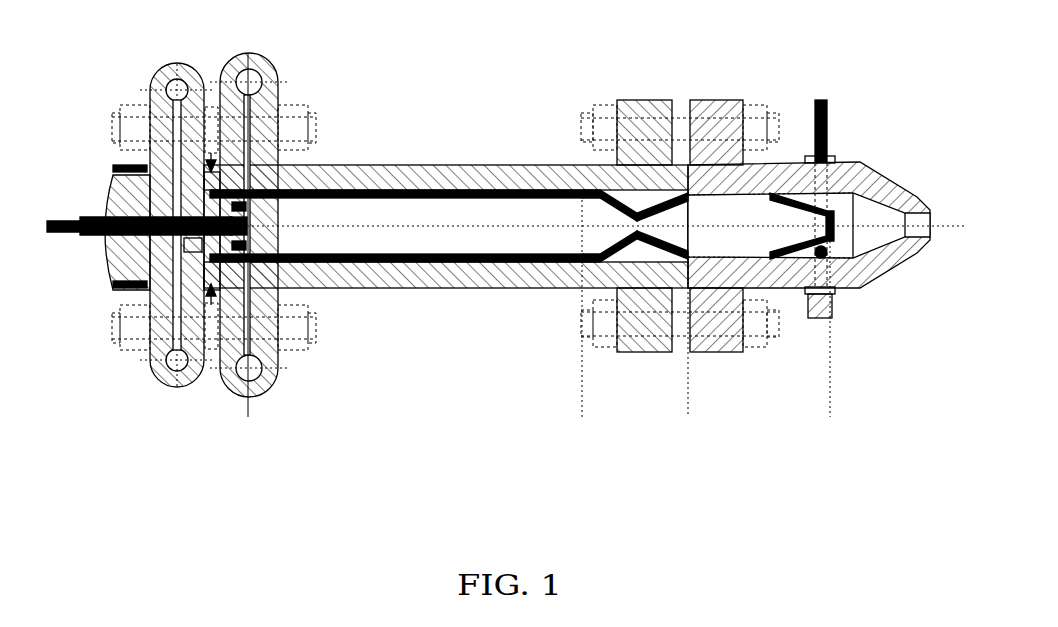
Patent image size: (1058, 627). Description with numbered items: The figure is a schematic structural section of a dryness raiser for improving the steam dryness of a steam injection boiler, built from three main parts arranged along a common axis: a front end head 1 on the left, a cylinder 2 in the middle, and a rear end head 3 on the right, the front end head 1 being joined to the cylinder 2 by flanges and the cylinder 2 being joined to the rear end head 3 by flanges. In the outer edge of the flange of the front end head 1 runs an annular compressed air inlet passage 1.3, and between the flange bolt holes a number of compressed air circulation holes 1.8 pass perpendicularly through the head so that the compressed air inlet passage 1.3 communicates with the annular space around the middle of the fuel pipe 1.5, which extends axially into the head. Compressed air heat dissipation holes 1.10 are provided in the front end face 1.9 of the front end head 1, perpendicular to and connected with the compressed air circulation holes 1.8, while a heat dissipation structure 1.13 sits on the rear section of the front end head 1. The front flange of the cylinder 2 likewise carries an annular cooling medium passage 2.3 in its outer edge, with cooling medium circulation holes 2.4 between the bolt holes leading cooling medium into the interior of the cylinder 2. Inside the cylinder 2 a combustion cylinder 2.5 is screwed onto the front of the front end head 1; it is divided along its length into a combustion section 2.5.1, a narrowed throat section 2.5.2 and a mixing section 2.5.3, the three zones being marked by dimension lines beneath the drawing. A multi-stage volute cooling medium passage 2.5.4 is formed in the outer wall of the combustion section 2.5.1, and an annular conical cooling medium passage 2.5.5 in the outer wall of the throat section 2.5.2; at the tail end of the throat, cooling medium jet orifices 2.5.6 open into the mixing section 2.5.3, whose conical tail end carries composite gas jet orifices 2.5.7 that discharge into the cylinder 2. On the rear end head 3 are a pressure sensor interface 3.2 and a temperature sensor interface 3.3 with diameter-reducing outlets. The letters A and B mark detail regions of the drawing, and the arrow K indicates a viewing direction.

The front end head 1 is at (137, 198).
The compressed air inlet passage 1.3 is at (180, 73).
The fuel pipe 1.5 is at (72, 228).
The compressed air circulation holes 1.8 is at (177, 117).
The front end face 1.9 is at (210, 241).
The compressed air heat dissipation holes 1.10 is at (192, 247).
The heat dissipation structure 1.13 is at (135, 168).
The cylinder 2 is at (340, 177).
The cooling medium passage 2.3 is at (257, 65).
The cooling medium circulation holes 2.4 is at (247, 133).
The combustion cylinder 2.5 is at (298, 213).
The combustion section 2.5.1 is at (582, 413).
The throat section 2.5.2 is at (688, 413).
The mixing section 2.5.3 is at (830, 413).
The multi-stage volute cooling medium passage 2.5.4 is at (398, 192).
The annular conical cooling medium passage 2.5.5 is at (617, 203).
The cooling medium jet orifices 2.5.6 is at (663, 207).
The composite gas jet orifices 2.5.7 is at (808, 207).
The rear end head 3 is at (778, 170).
The pressure sensor interface 3.2 is at (827, 112).
The temperature sensor interface 3.3 is at (828, 307).
The detail A is at (245, 258).
The detail B is at (710, 225).
The view direction K is at (816, 338).